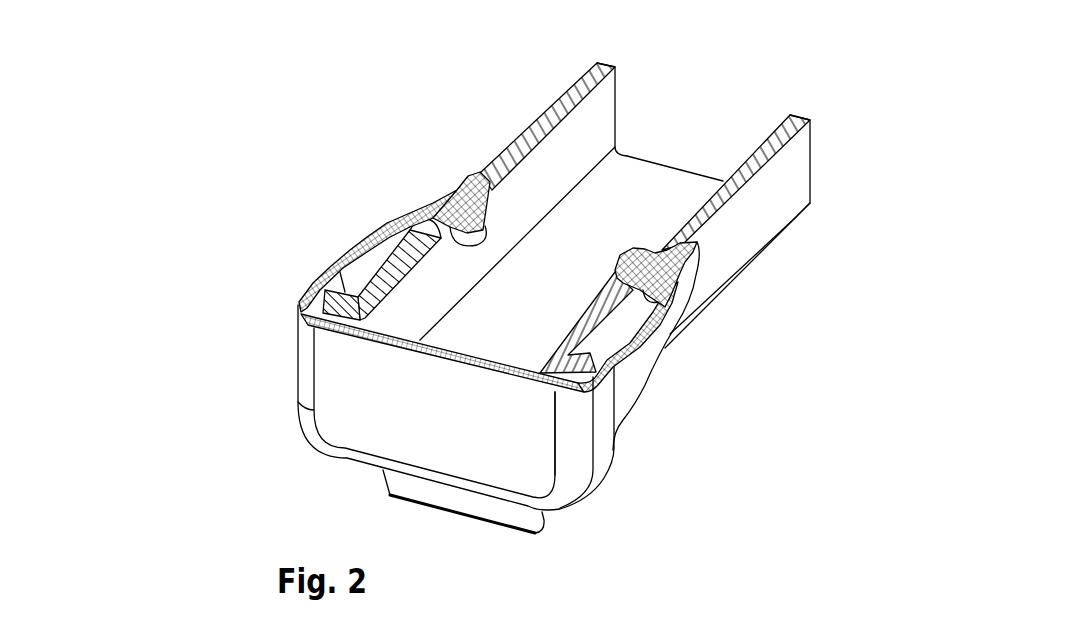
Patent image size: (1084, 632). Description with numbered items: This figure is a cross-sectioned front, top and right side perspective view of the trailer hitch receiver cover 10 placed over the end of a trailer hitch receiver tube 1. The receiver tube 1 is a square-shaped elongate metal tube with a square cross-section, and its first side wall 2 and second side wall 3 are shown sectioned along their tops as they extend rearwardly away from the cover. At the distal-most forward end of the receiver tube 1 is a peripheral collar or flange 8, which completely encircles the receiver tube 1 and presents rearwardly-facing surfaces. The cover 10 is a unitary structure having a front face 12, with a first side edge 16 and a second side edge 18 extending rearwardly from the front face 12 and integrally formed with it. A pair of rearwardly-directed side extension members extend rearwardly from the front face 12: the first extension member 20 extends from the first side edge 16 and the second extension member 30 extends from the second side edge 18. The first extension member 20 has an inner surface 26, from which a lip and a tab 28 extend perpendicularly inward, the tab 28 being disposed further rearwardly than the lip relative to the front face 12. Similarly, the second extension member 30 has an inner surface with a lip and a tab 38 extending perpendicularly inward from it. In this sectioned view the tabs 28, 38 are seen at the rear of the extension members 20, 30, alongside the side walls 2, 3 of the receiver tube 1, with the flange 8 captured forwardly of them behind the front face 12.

The trailer hitch receiver tube 1 is at (645, 178).
The first side wall 2 is at (533, 132).
The second side wall 3 is at (787, 193).
The peripheral collar or flange 8 is at (564, 373).
The trailer hitch receiver cover 10 is at (190, 165).
The front face 12 is at (362, 423).
The first side edge 16 is at (306, 362).
The second side edge 18 is at (606, 410).
The first extension member 20 is at (387, 232).
The inner surface 26 is at (371, 266).
The tab 28 is at (460, 213).
The second extension member 30 is at (653, 355).
The tab 38 is at (648, 267).